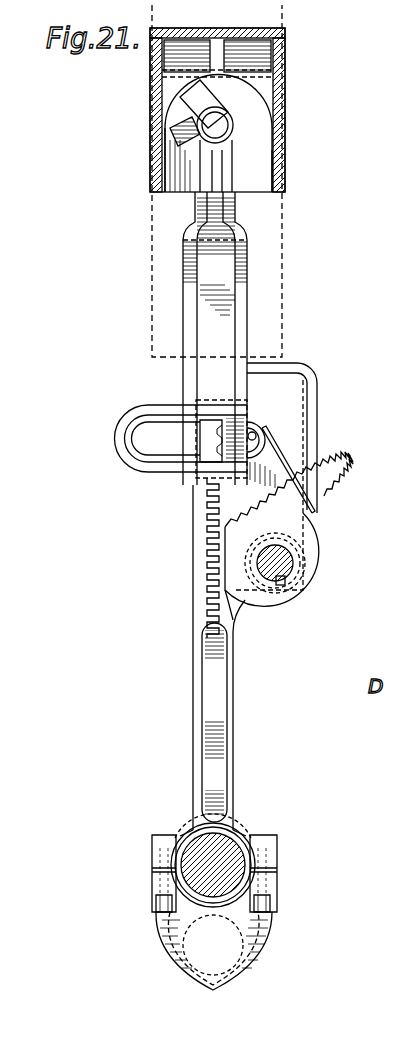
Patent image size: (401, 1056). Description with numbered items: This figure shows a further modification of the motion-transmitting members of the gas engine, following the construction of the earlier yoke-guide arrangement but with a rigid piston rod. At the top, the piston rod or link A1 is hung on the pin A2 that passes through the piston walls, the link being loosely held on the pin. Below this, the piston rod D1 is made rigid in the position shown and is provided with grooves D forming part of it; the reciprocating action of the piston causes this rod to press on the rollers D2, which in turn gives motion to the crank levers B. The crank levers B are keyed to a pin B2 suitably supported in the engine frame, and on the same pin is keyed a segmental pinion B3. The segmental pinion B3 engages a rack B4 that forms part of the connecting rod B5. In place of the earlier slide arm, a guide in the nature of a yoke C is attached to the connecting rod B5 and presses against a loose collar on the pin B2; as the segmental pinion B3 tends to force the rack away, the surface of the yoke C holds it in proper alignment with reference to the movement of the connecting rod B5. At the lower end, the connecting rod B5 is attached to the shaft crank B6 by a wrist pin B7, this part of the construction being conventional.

The piston rod A1 is at (285, 85).
The pin A2 is at (217, 125).
The piston rod D1 is at (233, 262).
The groove D is at (152, 478).
The roller D2 is at (265, 428).
The yoke guide C is at (318, 444).
The crank lever B is at (278, 479).
The segmental pinion B3 is at (327, 520).
The pin B2 is at (287, 568).
The rack B4 is at (200, 526).
The connecting rod B5 is at (220, 663).
The wrist pin B7 is at (235, 840).
The shaft crank B6 is at (240, 945).